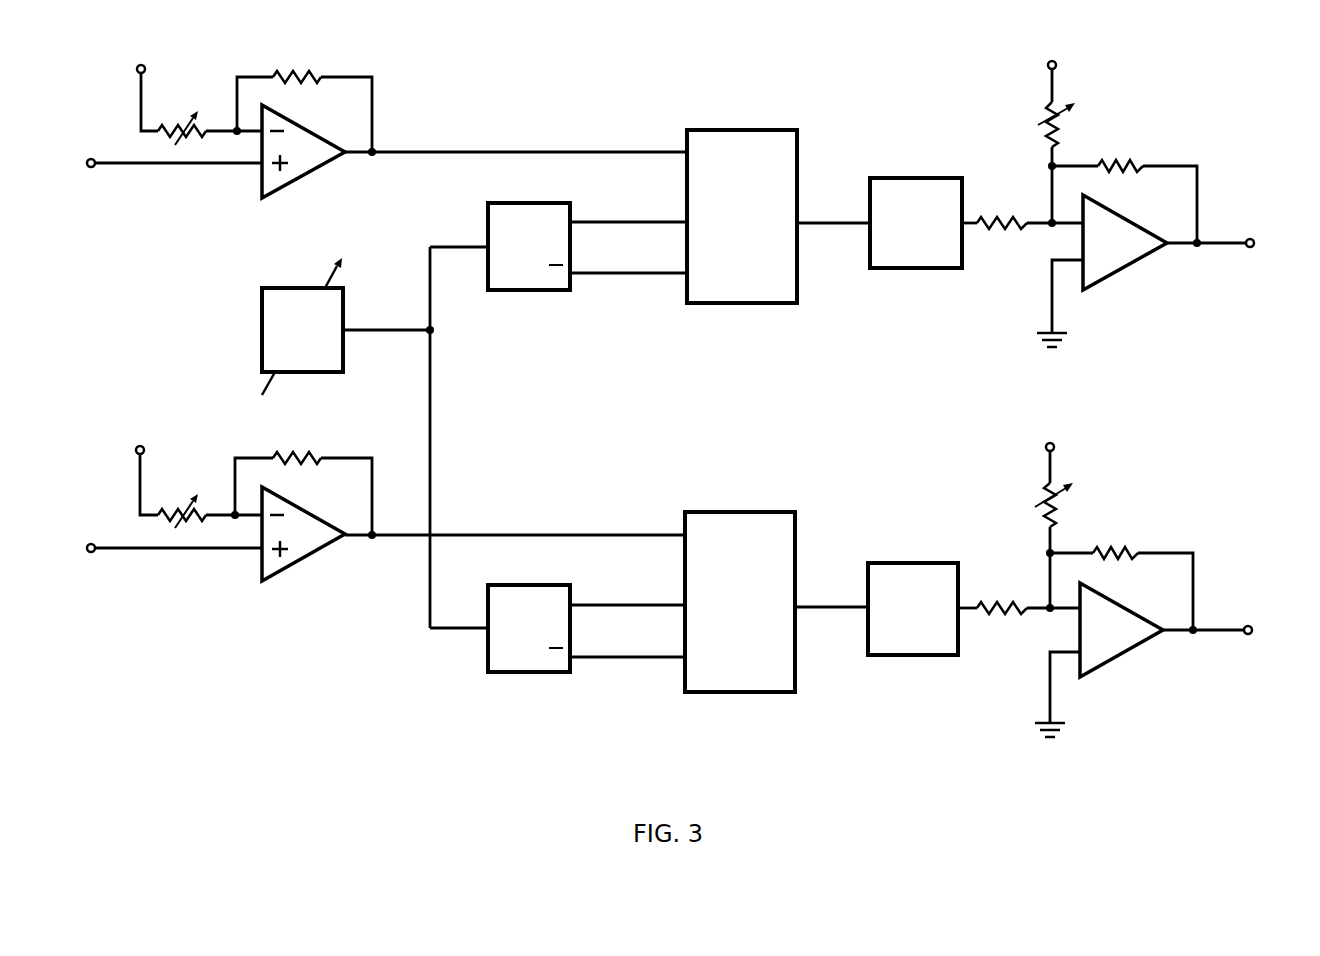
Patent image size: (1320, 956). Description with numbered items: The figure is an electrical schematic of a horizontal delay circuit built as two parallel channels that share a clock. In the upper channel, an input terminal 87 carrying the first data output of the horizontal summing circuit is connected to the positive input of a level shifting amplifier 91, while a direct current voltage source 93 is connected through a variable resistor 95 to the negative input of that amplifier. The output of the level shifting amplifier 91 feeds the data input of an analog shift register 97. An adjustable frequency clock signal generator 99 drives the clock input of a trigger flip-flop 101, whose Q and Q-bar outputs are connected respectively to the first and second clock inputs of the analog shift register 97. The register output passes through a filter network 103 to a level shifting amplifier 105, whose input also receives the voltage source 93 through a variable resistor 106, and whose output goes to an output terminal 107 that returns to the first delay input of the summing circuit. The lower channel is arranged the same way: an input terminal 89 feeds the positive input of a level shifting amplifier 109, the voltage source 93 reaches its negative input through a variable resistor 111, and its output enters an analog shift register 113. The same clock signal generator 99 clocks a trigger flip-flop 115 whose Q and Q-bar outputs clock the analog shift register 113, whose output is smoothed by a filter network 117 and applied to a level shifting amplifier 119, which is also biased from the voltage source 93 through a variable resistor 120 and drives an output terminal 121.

The input terminal 87 is at (88, 168).
The input terminal 89 is at (88, 553).
The level shifting amplifier 91 is at (305, 183).
The direct current voltage source 93 is at (145, 64).
The variable resistor 95 is at (182, 120).
The analog shift register 97 is at (715, 130).
The adjustable frequency clock signal generator 99 is at (262, 310).
The trigger flip-flop 101 is at (524, 290).
The filter network 103 is at (893, 178).
The level shifting amplifier 105 is at (1127, 268).
The variable resistor 106 is at (1068, 121).
The output terminal 107 is at (1254, 238).
The level shifting amplifier 109 is at (305, 566).
The variable resistor 111 is at (170, 505).
The analog shift register 113 is at (705, 512).
The trigger flip-flop 115 is at (545, 672).
The filter network 117 is at (885, 655).
The level shifting amplifier 119 is at (1113, 663).
The variable resistor 120 is at (1068, 510).
The output terminal 121 is at (1253, 636).